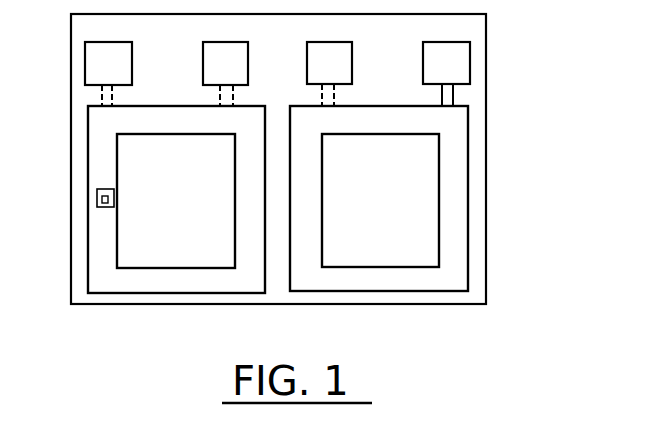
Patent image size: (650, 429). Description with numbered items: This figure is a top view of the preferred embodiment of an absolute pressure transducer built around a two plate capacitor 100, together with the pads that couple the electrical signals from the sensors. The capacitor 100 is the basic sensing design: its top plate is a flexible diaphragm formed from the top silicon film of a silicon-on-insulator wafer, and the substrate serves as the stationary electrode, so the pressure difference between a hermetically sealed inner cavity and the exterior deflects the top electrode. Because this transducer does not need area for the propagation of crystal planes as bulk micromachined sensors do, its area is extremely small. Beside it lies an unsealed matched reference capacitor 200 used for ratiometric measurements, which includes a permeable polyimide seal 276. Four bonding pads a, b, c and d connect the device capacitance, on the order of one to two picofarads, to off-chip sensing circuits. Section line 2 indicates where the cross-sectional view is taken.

The two plate capacitor 100 is at (455, 304).
The unsealed matched reference capacitor 200 is at (125, 316).
The permeable polyimide seal 276 is at (114, 198).
The section line 2- 2 is at (70, 200).